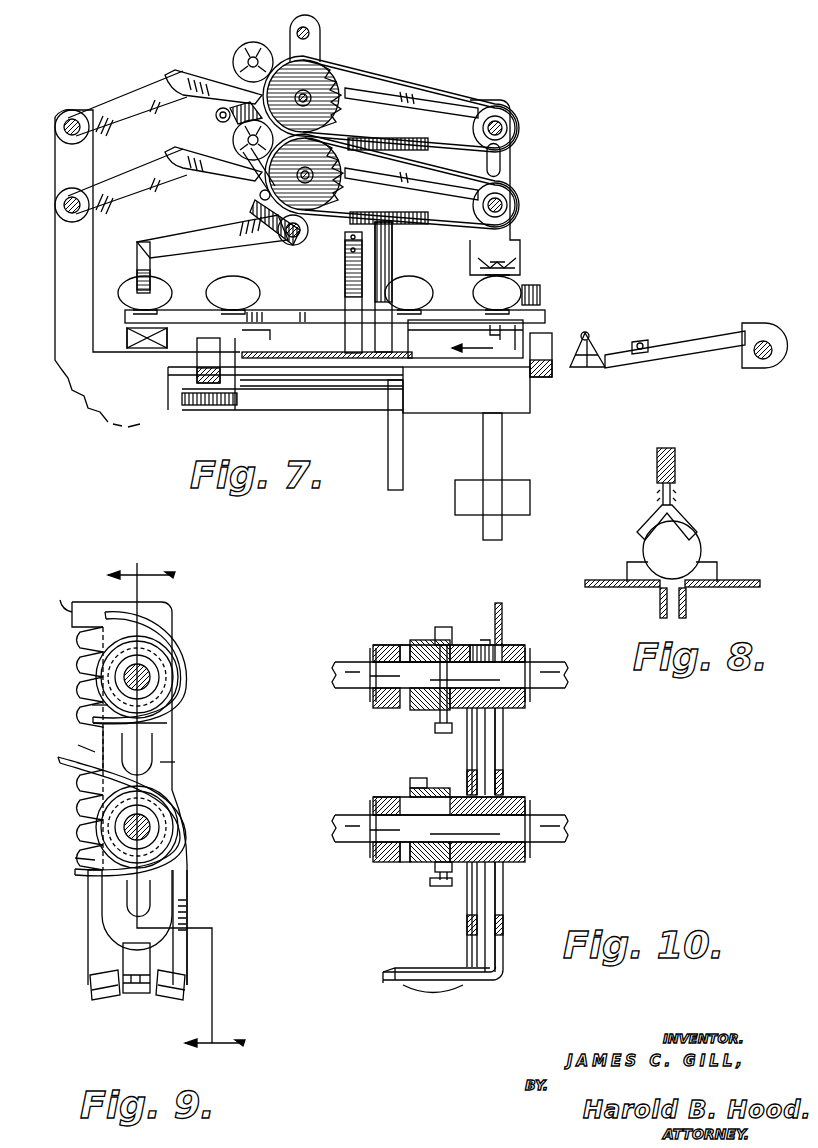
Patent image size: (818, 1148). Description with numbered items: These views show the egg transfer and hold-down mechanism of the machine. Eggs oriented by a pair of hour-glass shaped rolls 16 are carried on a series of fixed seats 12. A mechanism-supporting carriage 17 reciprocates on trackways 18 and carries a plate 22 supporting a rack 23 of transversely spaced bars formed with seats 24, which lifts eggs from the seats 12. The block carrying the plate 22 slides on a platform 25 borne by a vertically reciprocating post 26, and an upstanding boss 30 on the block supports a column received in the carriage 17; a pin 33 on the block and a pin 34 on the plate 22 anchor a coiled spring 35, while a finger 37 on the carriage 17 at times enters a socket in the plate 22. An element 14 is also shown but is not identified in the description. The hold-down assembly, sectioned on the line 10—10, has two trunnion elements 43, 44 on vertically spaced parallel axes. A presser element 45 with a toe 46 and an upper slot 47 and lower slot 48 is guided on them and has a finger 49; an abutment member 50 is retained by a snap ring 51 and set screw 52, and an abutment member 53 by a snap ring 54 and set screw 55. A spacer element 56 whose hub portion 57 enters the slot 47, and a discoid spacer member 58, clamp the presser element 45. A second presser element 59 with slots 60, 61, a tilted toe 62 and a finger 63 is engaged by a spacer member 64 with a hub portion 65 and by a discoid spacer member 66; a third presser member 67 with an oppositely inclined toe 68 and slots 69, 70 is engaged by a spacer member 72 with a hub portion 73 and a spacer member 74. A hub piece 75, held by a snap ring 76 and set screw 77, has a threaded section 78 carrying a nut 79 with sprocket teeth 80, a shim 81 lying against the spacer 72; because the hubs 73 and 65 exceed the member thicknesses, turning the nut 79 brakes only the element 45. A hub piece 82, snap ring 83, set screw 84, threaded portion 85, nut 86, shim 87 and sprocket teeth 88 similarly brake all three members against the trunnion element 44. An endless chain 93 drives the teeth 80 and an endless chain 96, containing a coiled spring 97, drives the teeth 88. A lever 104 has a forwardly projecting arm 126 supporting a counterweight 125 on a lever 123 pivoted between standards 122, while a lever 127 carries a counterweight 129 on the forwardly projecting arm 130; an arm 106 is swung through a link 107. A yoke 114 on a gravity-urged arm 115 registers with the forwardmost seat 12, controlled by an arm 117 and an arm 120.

In FIG. 9, the section line 10 is at (176, 810).
In FIG. 7, the seats 12 is at (525, 332).
In FIG. 8, the seats 12 is at (705, 572).
In FIG. 7, the operating link 14 is at (630, 336).
In FIG. 7, the rolls 16 is at (150, 350).
In FIG. 7, the mechanism-supporting carriage 17 is at (518, 90).
In FIG. 7, the trackways 18 is at (540, 294).
In FIG. 7, the plate 22 is at (412, 355).
In FIG. 7, the rack 23 is at (265, 312).
In FIG. 8, the rack 23 is at (688, 608).
In FIG. 8, the seats 24 is at (658, 598).
In FIG. 7, the platform 25 is at (532, 400).
In FIG. 7, the post 26 is at (503, 446).
In FIG. 7, the upstanding boss 30 is at (457, 338).
In FIG. 7, the pin 33 is at (182, 399).
In FIG. 7, the pin 34 is at (405, 398).
In FIG. 7, the coiled spring 35 is at (386, 410).
In FIG. 7, the finger 37 is at (353, 300).
In FIG. 7, the trunnion element 43 is at (517, 125).
In FIG. 9, the trunnion element 43 is at (152, 672).
In FIG. 10, the trunnion element 43 is at (560, 668).
In FIG. 7, the trunnion element 44 is at (517, 209).
In FIG. 9, the trunnion element 44 is at (152, 825).
In FIG. 10, the trunnion element 44 is at (562, 822).
In FIG. 9, the presser element 45 is at (165, 622).
In FIG. 10, the presser element 45 is at (503, 612).
In FIG. 9, the foot or toe 46 is at (140, 995).
In FIG. 10, the foot or toe 46 is at (498, 984).
In FIG. 10, the upper slot 47 is at (498, 735).
In FIG. 10, the lower slot 48 is at (498, 890).
In FIG. 7, the finger 49 is at (480, 100).
In FIG. 9, the finger 49 is at (59, 597).
In FIG. 10, the abutment member 50 is at (525, 648).
In FIG. 10, the snap ring 51 is at (530, 660).
In FIG. 10, the set screw 52 is at (527, 700).
In FIG. 10, the abutment member 53 is at (525, 800).
In FIG. 10, the snap ring 54 is at (530, 815).
In FIG. 10, the set screw 55 is at (527, 858).
In FIG. 10, the spacer element 56 is at (486, 640).
In FIG. 10, the hub portion 57 is at (510, 645).
In FIG. 10, the discoid spacer member 58 is at (504, 790).
In FIG. 9, the second presser element 59 is at (188, 890).
In FIG. 10, the second presser element 59 is at (504, 770).
In FIG. 10, the slot 60 is at (470, 760).
In FIG. 10, the slot 61 is at (505, 908).
In FIG. 9, the toe 62 is at (188, 992).
In FIG. 10, the toe 62 is at (420, 984).
In FIG. 7, the finger 63 is at (472, 181).
In FIG. 9, the finger 63 is at (95, 752).
In FIG. 10, the spacer member 64 is at (467, 735).
In FIG. 10, the hub portion 65 is at (478, 645).
In FIG. 10, the discoid spacer member 66 is at (467, 922).
In FIG. 9, the third presser member 67 is at (175, 765).
In FIG. 10, the third presser member 67 is at (467, 783).
In FIG. 9, the toe 68 is at (105, 1000).
In FIG. 9, the slot 69 is at (150, 740).
In FIG. 10, the slot 69 is at (420, 778).
In FIG. 9, the slot 70 is at (127, 900).
In FIG. 10, the slot 70 is at (472, 925).
In FIG. 10, the spacer member 72 is at (437, 730).
In FIG. 10, the hub portion 73 is at (462, 645).
In FIG. 10, the spacer member 74 is at (467, 890).
In FIG. 9, the hub piece 75 is at (160, 679).
In FIG. 10, the hub piece 75 is at (380, 645).
In FIG. 10, the snap ring 76 is at (370, 665).
In FIG. 10, the set screw 77 is at (380, 705).
In FIG. 10, the externally threaded section 78 is at (415, 644).
In FIG. 9, the nut 79 is at (158, 697).
In FIG. 10, the nut 79 is at (412, 640).
In FIG. 9, the sprocket teeth 80 is at (95, 712).
In FIG. 10, the sprocket teeth 80 is at (425, 710).
In FIG. 10, the washer or shim 81 is at (440, 626).
In FIG. 9, the hub piece 82 is at (160, 832).
In FIG. 10, the hub piece 82 is at (375, 800).
In FIG. 10, the snap ring 83 is at (375, 852).
In FIG. 10, the set screw 84 is at (405, 862).
In FIG. 10, the externally threaded portion 85 is at (435, 886).
In FIG. 9, the nut 86 is at (165, 856).
In FIG. 10, the nut 86 is at (420, 865).
In FIG. 10, the washer or shim 87 is at (442, 876).
In FIG. 9, the sprocket teeth 88 is at (78, 845).
In FIG. 10, the sprocket teeth 88 is at (410, 792).
In FIG. 9, the endless chain 93 is at (112, 612).
In FIG. 9, the endless chain 96 is at (65, 768).
In FIG. 7, the coiled spring 97 is at (430, 219).
In FIG. 7, the lever 104 is at (422, 114).
In FIG. 7, the arm 106 is at (365, 210).
In FIG. 7, the link 107 is at (420, 284).
In FIG. 7, the yoke 114 is at (143, 283).
In FIG. 8, the yoke 114 is at (690, 508).
In FIG. 8, the arm 115 is at (676, 462).
In FIG. 7, the arm 117 is at (222, 236).
In FIG. 7, the arm 120 is at (238, 138).
In FIG. 7, the standards 122 is at (65, 268).
In FIG. 7, the lever 123 is at (128, 103).
In FIG. 7, the counterweight 125 is at (258, 52).
In FIG. 7, the forwardly projecting arm 126 is at (193, 82).
In FIG. 7, the lever 127 is at (118, 182).
In FIG. 7, the counterweight 129 is at (247, 158).
In FIG. 7, the forwardly projecting arm 130 is at (208, 174).